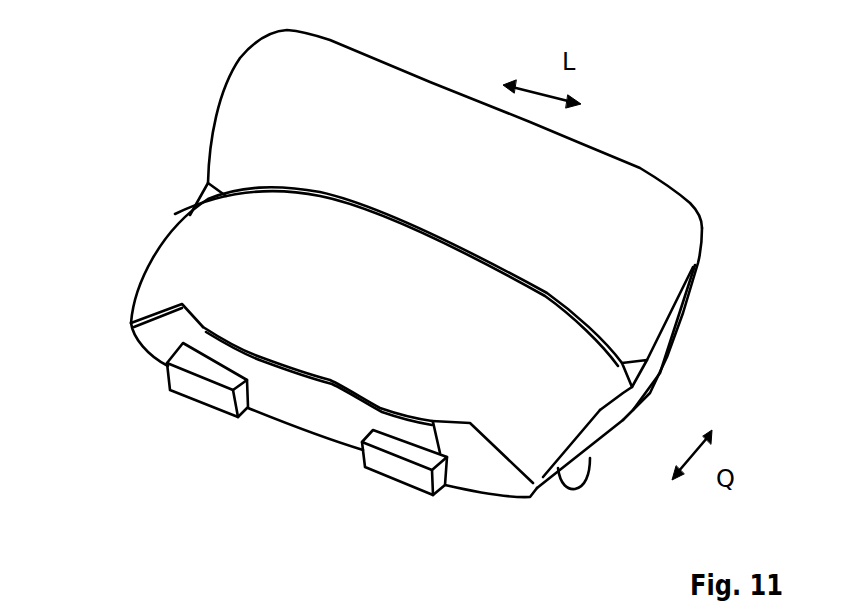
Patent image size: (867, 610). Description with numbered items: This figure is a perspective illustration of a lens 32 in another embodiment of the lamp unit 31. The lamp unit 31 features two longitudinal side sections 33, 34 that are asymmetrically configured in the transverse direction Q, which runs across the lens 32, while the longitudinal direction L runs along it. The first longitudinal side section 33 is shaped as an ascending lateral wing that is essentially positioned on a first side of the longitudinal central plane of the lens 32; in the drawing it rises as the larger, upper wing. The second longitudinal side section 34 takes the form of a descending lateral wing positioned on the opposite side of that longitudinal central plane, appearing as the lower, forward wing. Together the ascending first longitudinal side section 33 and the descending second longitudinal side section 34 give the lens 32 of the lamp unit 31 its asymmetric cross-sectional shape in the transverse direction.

The lamp unit 31 is at (152, 482).
The lens 32 is at (728, 261).
The first longitudinal side section 33 is at (653, 198).
The second longitudinal side section 34 is at (162, 275).